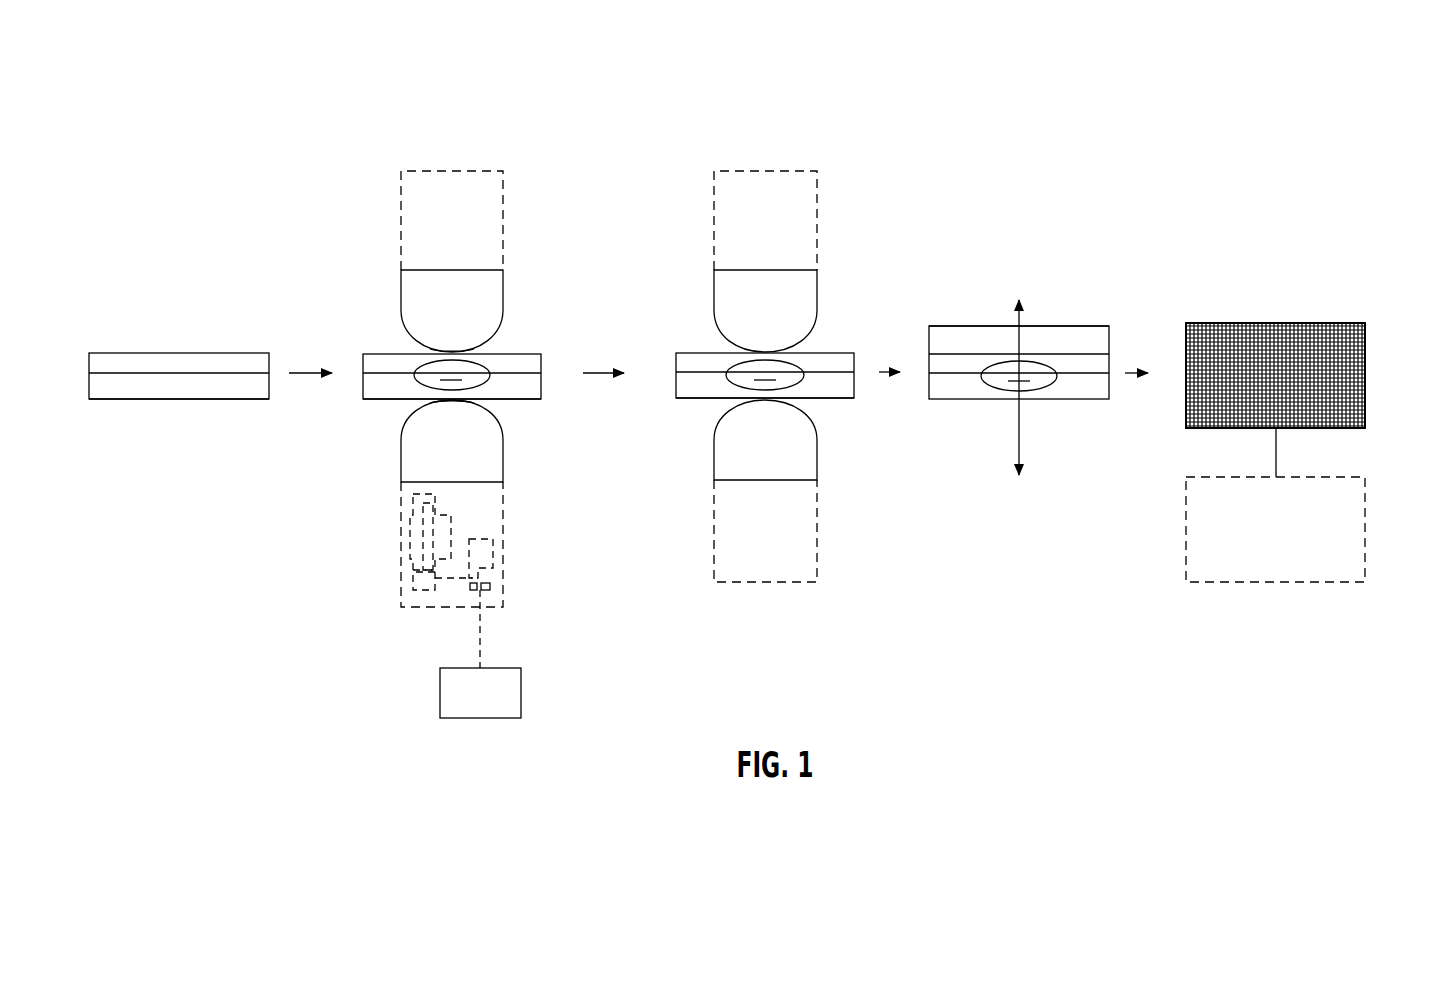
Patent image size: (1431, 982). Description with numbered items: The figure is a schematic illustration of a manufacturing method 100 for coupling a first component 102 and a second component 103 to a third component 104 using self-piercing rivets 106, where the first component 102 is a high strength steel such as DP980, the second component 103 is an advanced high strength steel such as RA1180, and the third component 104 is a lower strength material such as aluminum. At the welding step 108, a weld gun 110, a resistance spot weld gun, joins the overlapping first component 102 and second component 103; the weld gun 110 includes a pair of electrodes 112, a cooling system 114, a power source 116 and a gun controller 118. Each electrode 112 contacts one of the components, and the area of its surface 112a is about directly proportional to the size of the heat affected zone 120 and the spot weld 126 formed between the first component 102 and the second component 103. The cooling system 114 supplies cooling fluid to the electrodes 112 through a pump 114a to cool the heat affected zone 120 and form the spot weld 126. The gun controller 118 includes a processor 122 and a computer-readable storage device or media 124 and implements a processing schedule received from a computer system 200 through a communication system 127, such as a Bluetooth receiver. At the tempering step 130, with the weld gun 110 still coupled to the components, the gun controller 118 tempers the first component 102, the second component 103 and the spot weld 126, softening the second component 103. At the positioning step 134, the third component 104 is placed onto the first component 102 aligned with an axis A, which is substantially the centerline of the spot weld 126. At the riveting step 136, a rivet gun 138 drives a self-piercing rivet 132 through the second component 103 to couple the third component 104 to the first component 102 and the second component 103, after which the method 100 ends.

The manufacturing method 100 is at (196, 128).
The first component 102 is at (112, 353).
The second component 103 is at (122, 399).
The third component 104 is at (1075, 326).
The self-piercing rivets 106 is at (208, 337).
The welding step 108 is at (548, 231).
The weld gun 110 is at (513, 183).
The electrodes 112 is at (503, 282).
The surface 112a is at (470, 350).
The cooling system 114 is at (413, 497).
The pump 114a is at (435, 503).
The power source 116 is at (413, 585).
The gun controller 118 is at (487, 592).
The heat affected zone 120 is at (497, 370).
The processor 122 is at (488, 583).
The computer-readable storage device or media 124 is at (473, 592).
The spot weld 126 is at (430, 382).
The communication system 127 is at (493, 548).
The tempering step 130 is at (848, 242).
The self-piercing rivet 132 is at (1285, 372).
The positioning step 134 is at (1075, 248).
The riveting step 136 is at (1335, 247).
The rivet gun 138 is at (1186, 545).
The computer system 200 is at (460, 708).
The axis A is at (1012, 462).